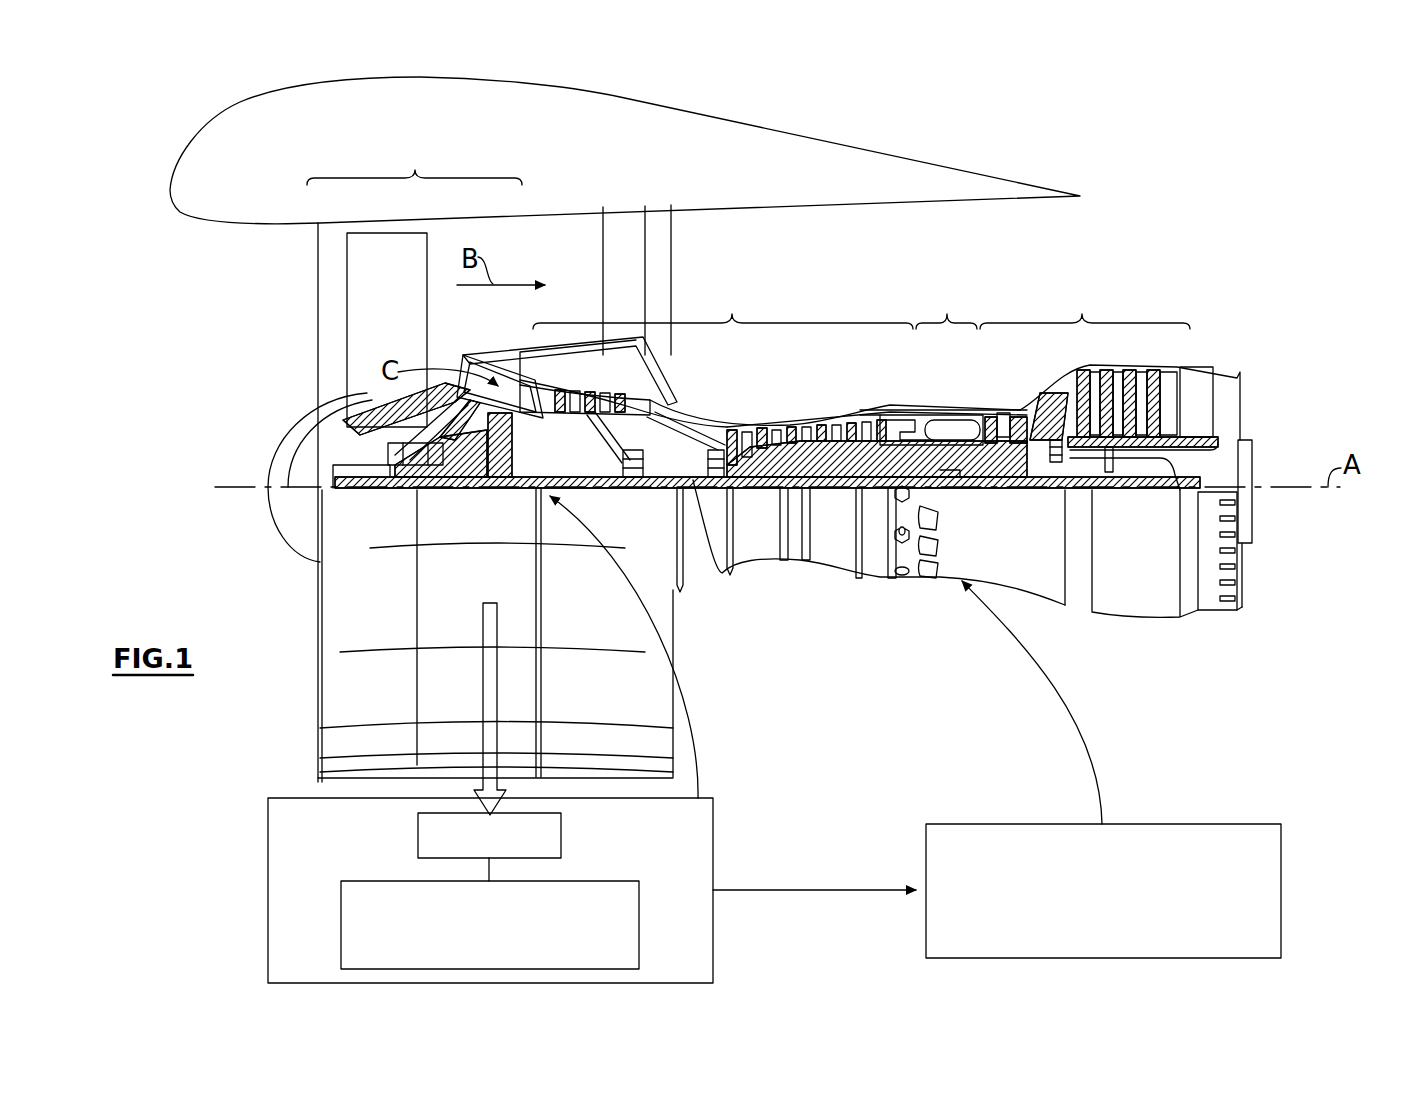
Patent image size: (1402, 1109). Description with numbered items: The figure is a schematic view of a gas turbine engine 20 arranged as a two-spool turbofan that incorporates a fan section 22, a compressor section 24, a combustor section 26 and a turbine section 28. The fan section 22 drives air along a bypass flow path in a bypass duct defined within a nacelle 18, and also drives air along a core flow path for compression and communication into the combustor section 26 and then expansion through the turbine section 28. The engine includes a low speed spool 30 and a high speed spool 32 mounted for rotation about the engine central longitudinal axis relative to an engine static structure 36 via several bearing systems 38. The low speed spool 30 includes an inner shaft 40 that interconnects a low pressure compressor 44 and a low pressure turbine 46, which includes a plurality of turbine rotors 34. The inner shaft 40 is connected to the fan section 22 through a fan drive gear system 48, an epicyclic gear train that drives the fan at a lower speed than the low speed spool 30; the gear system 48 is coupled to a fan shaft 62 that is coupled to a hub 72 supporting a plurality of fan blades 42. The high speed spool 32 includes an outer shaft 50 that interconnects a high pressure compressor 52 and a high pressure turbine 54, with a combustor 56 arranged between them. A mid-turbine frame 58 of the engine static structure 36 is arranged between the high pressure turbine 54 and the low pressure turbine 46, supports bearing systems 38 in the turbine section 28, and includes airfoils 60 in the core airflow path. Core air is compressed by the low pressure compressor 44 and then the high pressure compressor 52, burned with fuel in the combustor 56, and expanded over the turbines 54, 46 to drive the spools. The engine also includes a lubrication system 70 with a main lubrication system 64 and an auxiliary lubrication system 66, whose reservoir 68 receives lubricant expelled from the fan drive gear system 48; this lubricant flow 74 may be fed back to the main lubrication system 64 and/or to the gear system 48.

The nacelle 18 is at (633, 127).
The gas turbine engine 20 is at (1162, 138).
The fan section 22 is at (414, 164).
The compressor section 24 is at (723, 304).
The combustor section 26 is at (946, 304).
The turbine section 28 is at (1085, 304).
The low speed spool 30 is at (829, 497).
The high speed spool 32 is at (872, 423).
The turbine rotors 34 is at (1150, 455).
The engine static structure 36 is at (868, 578).
The bearing systems 38 is at (398, 478).
The inner shaft 40 is at (698, 560).
The fan blades 42 is at (401, 343).
The low pressure compressor 44 is at (648, 344).
The low pressure turbine 46 is at (1133, 372).
The fan drive gear system 48 is at (503, 478).
The outer shaft 50 is at (940, 470).
The high pressure compressor 52 is at (802, 424).
The high pressure turbine 54 is at (1027, 430).
The combustor 56 is at (942, 427).
The mid-turbine frame 58 is at (1052, 390).
The airfoils 60 is at (1060, 425).
The fan shaft 62 is at (648, 450).
The main lubrication system 64 is at (1281, 922).
The auxiliary lubrication system 66 is at (713, 946).
The reservoir 68 is at (561, 836).
The lubrication system 70 is at (1232, 776).
The hub 72 is at (325, 465).
The lubricant flow 74 is at (486, 687).